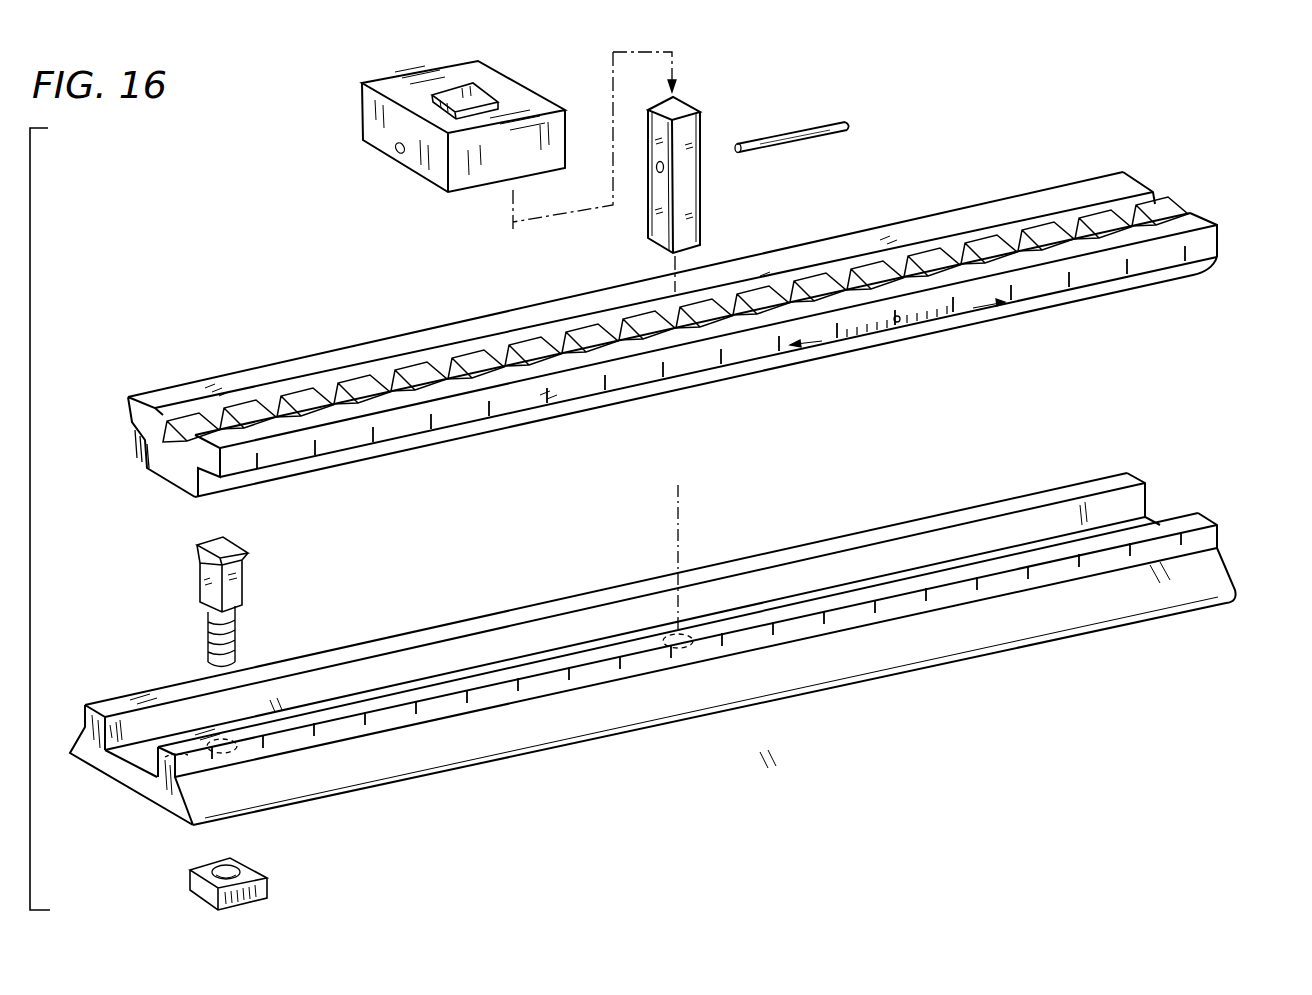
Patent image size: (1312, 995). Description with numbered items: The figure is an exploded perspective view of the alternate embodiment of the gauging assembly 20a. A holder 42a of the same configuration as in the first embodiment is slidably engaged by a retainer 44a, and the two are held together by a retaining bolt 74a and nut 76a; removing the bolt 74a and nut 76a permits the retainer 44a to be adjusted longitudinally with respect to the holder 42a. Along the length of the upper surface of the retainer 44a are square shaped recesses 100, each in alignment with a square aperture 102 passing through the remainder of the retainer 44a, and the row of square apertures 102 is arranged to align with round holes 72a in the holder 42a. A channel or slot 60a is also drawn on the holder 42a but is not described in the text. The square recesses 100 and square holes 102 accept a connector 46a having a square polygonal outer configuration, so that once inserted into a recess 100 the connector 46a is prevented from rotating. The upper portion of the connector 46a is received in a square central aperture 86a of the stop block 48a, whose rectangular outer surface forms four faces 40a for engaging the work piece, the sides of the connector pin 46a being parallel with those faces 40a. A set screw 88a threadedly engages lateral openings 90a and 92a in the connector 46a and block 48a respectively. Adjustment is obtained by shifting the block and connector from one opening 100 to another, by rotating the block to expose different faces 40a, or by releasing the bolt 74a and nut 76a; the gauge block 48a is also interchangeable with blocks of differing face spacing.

The gauging assembly 20a is at (1226, 167).
The faces 40a is at (490, 170).
The holder 42a is at (612, 738).
The retainer 44a is at (940, 336).
The connector 46a is at (707, 135).
The stop block 48a is at (392, 174).
The channel 60a is at (532, 660).
The round holes 72a is at (700, 620).
The retaining bolt 74a is at (205, 586).
The nut 76a is at (196, 882).
The square central aperture 86a is at (488, 93).
The set screw 88a is at (794, 142).
The lateral opening 90a is at (657, 169).
The lateral opening 92a is at (394, 150).
The square shaped recesses 100 is at (263, 402).
The square aperture 102 is at (298, 478).